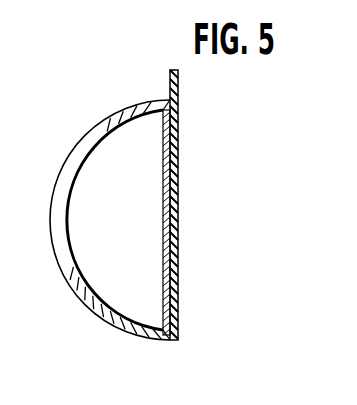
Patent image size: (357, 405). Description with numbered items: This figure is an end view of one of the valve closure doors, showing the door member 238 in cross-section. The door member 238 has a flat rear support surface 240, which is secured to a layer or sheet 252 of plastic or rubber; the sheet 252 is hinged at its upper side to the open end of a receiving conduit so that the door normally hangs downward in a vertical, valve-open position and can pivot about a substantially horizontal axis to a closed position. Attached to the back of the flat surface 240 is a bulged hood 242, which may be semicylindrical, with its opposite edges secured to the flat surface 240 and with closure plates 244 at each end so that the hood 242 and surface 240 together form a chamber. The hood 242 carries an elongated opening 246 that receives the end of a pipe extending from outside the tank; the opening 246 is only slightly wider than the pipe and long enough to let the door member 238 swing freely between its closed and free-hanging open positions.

The door member 238 is at (101, 205).
The flat rear support surface 240 is at (165, 247).
The hood 242 is at (83, 289).
The closure plate 244 is at (130, 192).
The elongated opening 246 is at (73, 161).
The layer or sheet 252 is at (179, 165).